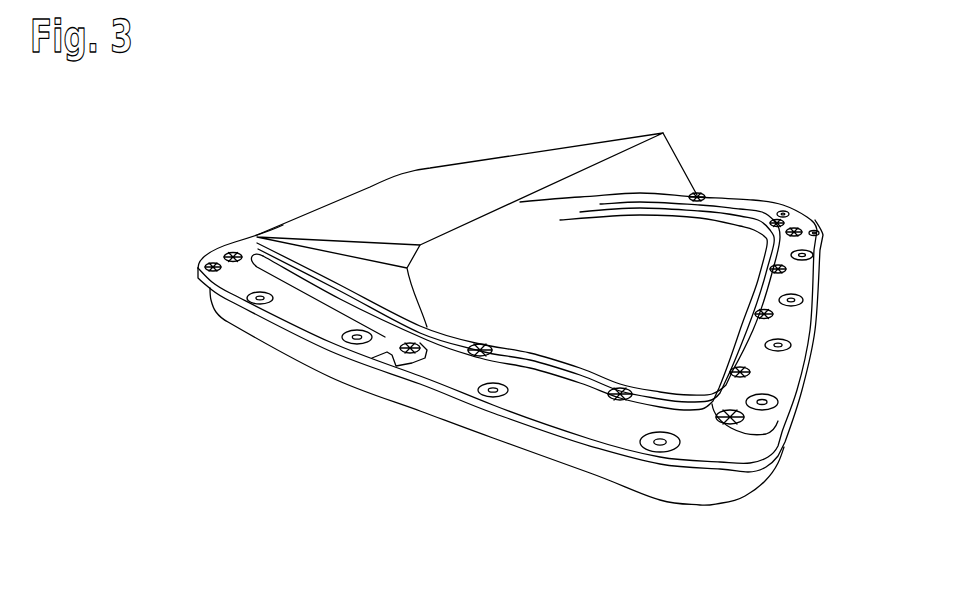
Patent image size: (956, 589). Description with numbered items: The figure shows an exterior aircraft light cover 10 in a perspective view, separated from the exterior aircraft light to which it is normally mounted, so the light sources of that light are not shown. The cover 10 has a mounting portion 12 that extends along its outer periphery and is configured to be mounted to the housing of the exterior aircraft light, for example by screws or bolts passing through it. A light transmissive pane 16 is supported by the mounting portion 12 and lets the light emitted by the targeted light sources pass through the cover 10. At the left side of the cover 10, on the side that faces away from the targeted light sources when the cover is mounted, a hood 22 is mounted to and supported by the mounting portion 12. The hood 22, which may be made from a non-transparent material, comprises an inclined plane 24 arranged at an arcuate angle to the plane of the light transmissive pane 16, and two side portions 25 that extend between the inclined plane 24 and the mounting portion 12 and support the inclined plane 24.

The exterior aircraft light cover 10 is at (515, 460).
The mounting portion 12 is at (599, 417).
The light transmissive pane 16 is at (727, 262).
The hood 22 is at (441, 156).
The inclined plane 24 is at (547, 167).
The side portions 25 is at (695, 193).